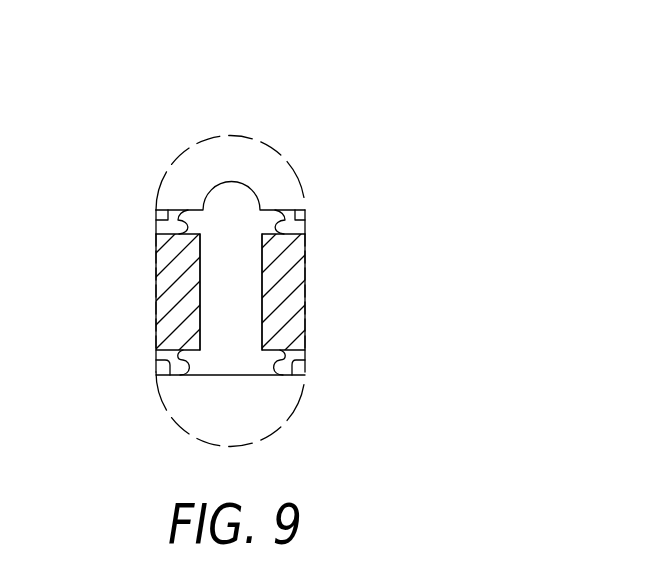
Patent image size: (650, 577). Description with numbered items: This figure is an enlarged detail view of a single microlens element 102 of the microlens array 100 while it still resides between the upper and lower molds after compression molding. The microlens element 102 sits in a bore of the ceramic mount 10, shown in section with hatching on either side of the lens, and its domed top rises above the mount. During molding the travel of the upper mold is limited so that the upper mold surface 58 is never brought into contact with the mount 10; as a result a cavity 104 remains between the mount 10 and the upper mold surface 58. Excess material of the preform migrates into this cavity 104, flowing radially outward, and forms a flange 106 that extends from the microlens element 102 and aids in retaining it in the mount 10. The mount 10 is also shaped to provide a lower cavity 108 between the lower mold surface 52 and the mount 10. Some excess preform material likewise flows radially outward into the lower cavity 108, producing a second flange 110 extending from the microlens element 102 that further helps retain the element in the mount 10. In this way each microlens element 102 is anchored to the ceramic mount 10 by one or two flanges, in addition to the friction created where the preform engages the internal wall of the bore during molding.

The microlens array 100 is at (353, 82).
The mount 10 is at (298, 332).
The microlens element 102 is at (248, 285).
The cavity 104 is at (300, 218).
The flange 106 is at (270, 223).
The lower cavity 108 is at (260, 359).
The second flange 110 is at (300, 375).
The upper mold surface 58 is at (168, 219).
The lower mold surface 52 is at (170, 361).